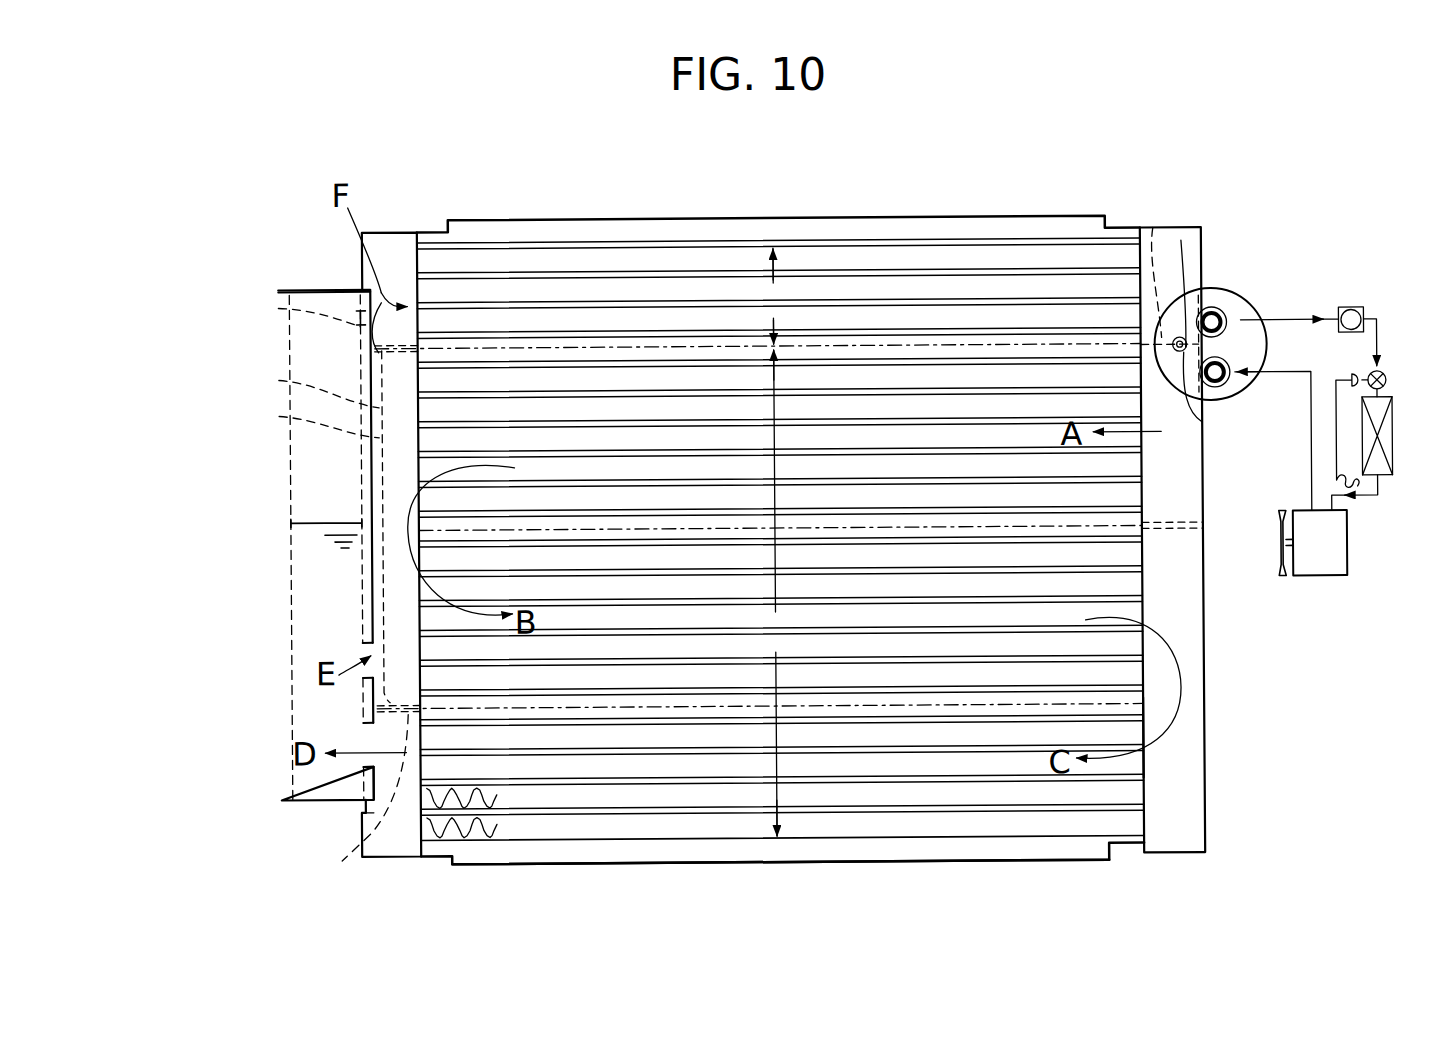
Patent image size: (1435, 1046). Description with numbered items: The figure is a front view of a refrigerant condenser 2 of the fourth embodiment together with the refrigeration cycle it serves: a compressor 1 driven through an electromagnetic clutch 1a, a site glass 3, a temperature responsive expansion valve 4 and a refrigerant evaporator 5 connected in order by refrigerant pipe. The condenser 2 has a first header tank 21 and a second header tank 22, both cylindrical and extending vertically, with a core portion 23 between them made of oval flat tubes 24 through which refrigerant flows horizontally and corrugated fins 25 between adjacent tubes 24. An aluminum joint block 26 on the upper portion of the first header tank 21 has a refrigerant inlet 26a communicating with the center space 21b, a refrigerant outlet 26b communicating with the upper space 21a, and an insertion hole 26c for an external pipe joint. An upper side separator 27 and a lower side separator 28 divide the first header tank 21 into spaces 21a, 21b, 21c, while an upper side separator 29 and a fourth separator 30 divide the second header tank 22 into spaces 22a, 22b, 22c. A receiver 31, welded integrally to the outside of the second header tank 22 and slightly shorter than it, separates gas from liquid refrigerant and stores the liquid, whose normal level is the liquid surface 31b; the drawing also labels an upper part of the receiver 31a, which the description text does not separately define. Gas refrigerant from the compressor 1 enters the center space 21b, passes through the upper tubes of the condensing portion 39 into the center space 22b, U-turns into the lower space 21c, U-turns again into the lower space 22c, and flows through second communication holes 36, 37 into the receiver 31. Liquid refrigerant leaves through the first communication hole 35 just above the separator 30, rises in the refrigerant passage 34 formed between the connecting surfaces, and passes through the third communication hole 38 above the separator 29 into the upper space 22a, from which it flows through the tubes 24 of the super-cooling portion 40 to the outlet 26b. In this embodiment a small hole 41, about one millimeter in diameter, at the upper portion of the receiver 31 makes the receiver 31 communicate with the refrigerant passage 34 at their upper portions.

The compressor 1 is at (1322, 575).
The electromagnetic clutch 1a is at (1283, 582).
The refrigerant condenser 2 is at (882, 868).
The site glass 3 is at (1352, 310).
The temperature responsive expansion valve 4 is at (1387, 383).
The refrigerant evaporator 5 is at (1393, 440).
The first header tank 21 is at (1203, 247).
The upper space of the first header tank 21a is at (1183, 243).
The center space of the first header tank 21b is at (1185, 478).
The lower space of the first header tank 21c is at (1188, 619).
The second header tank 22 is at (364, 251).
The upper space of the second header tank 22a is at (400, 268).
The center space of the second header tank 22b is at (280, 375).
The lower space of the second header tank 22c is at (397, 830).
The core portion 23 is at (616, 420).
The oval flat tube 24 is at (603, 814).
The corrugated fin 25 is at (497, 797).
The joint block 26 is at (1234, 299).
The refrigerant inlet 26a is at (1227, 384).
The refrigerant outlet 26b is at (1220, 318).
The insertion hole 26c is at (1183, 355).
The upper side separator 27 is at (1155, 230).
The lower side separator 28 is at (1172, 530).
The upper side separator 29 is at (375, 370).
The fourth separator 30 is at (363, 803).
The receiver 31 is at (270, 440).
The upper wall of receiver tank 31a is at (330, 288).
The liquid surface 31b is at (332, 520).
The refrigerant passage 34 is at (280, 410).
The first communication hole 35 is at (368, 650).
The second communication hole 36 is at (368, 735).
The second communication hole 37 is at (368, 735).
The third communication hole 38 is at (280, 302).
The condensing portion 39 is at (775, 593).
The super-cooling portion 40 is at (771, 296).
The small hole 41 is at (360, 306).